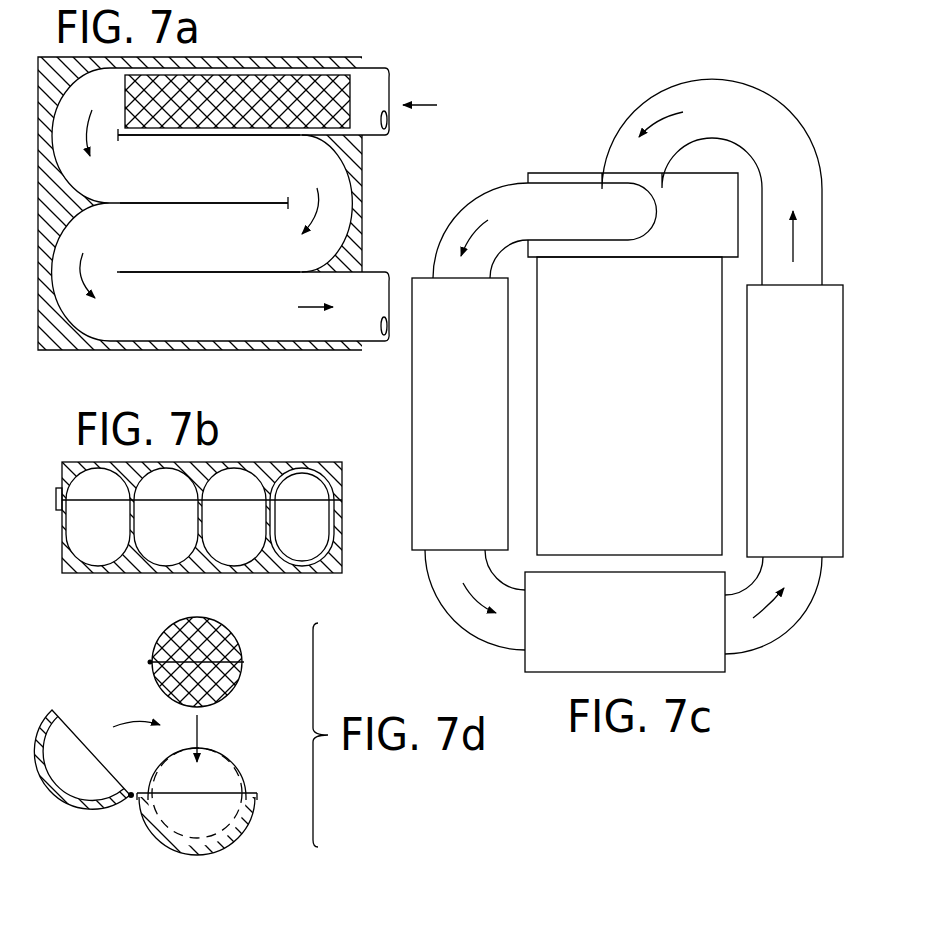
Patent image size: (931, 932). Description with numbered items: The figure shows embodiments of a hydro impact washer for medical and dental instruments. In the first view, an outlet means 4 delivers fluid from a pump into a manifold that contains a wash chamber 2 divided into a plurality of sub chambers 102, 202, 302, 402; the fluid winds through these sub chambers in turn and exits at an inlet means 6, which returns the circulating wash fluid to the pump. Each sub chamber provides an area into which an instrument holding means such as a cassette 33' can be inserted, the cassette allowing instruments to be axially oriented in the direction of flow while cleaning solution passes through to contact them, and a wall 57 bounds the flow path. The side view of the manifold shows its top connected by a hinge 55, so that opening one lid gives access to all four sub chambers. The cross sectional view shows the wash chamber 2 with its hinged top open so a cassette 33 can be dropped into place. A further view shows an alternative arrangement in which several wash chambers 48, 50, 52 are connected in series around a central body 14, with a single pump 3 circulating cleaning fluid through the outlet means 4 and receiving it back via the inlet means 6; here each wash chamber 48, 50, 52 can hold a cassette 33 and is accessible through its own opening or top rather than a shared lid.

In FIG. 7A, the sub chamber 102 is at (300, 60).
In FIG. 7A, the cassette 33' is at (246, 75).
In FIG. 7B, the cassette 33' is at (302, 491).
In FIG. 7A, the outlet means 4 is at (376, 80).
In FIG. 7C, the outlet means 4 is at (633, 226).
In FIG. 7A, the inlet means 6 is at (370, 283).
In FIG. 7C, the inlet means 6 is at (623, 148).
In FIG. 7A, the housing wall 57 is at (353, 160).
In FIG. 7A, the sub chamber 202 is at (232, 182).
In FIG. 7A, the sub chamber 302 is at (227, 248).
In FIG. 7A, the sub chamber 402 is at (227, 318).
In FIG. 7B, the hinge 55 is at (58, 505).
In FIG. 7C, the pump 3 is at (706, 226).
In FIG. 7C, the wash chamber 48 is at (473, 443).
In FIG. 7C, the central chamber 14 is at (645, 443).
In FIG. 7C, the wash chamber 52 is at (806, 445).
In FIG. 7C, the wash chamber 50 is at (638, 631).
In FIG. 7D, the cassette 33 is at (216, 657).
In FIG. 7D, the wash chamber 2 is at (250, 806).